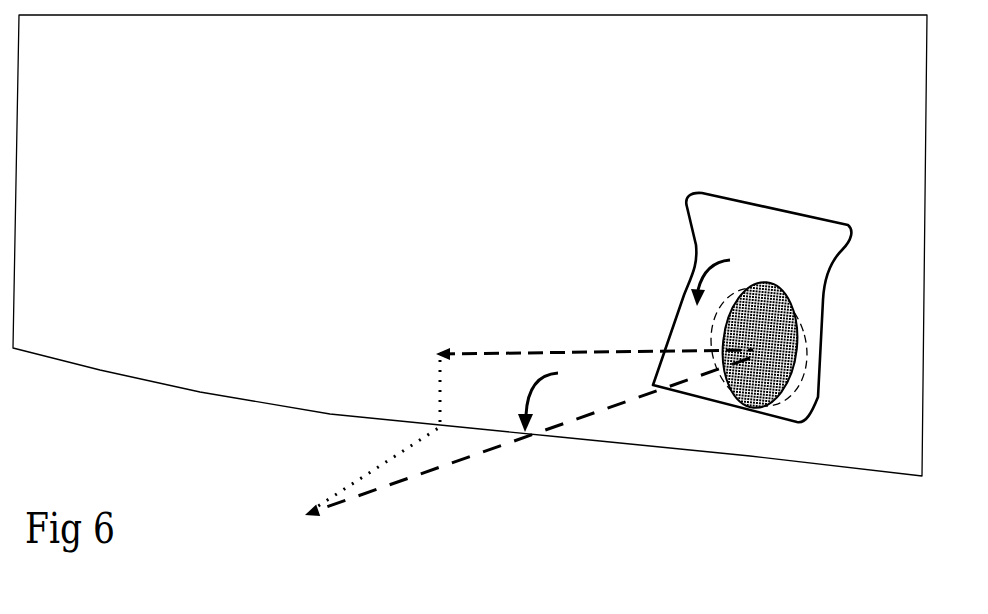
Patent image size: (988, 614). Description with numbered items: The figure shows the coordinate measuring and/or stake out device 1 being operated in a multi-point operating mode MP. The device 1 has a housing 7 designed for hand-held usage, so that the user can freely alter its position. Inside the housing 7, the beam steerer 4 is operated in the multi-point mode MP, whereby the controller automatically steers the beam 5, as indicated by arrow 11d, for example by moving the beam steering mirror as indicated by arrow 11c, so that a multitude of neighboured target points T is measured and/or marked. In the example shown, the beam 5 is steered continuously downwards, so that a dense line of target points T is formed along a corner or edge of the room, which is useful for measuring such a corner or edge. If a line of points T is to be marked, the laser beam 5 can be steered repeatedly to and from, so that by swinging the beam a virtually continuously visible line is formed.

The coordinate measuring and/or stake out device 1 is at (755, 253).
The housing 7 is at (840, 220).
The beam steerer 4 is at (745, 332).
The beam 5 is at (547, 352).
The arrow indicating movement of the beam steering mirror 11c is at (705, 272).
The arrow indicating steering of the beam 11d is at (530, 387).
The target point T is at (415, 377).
The multi-point operating mode MP is at (738, 435).